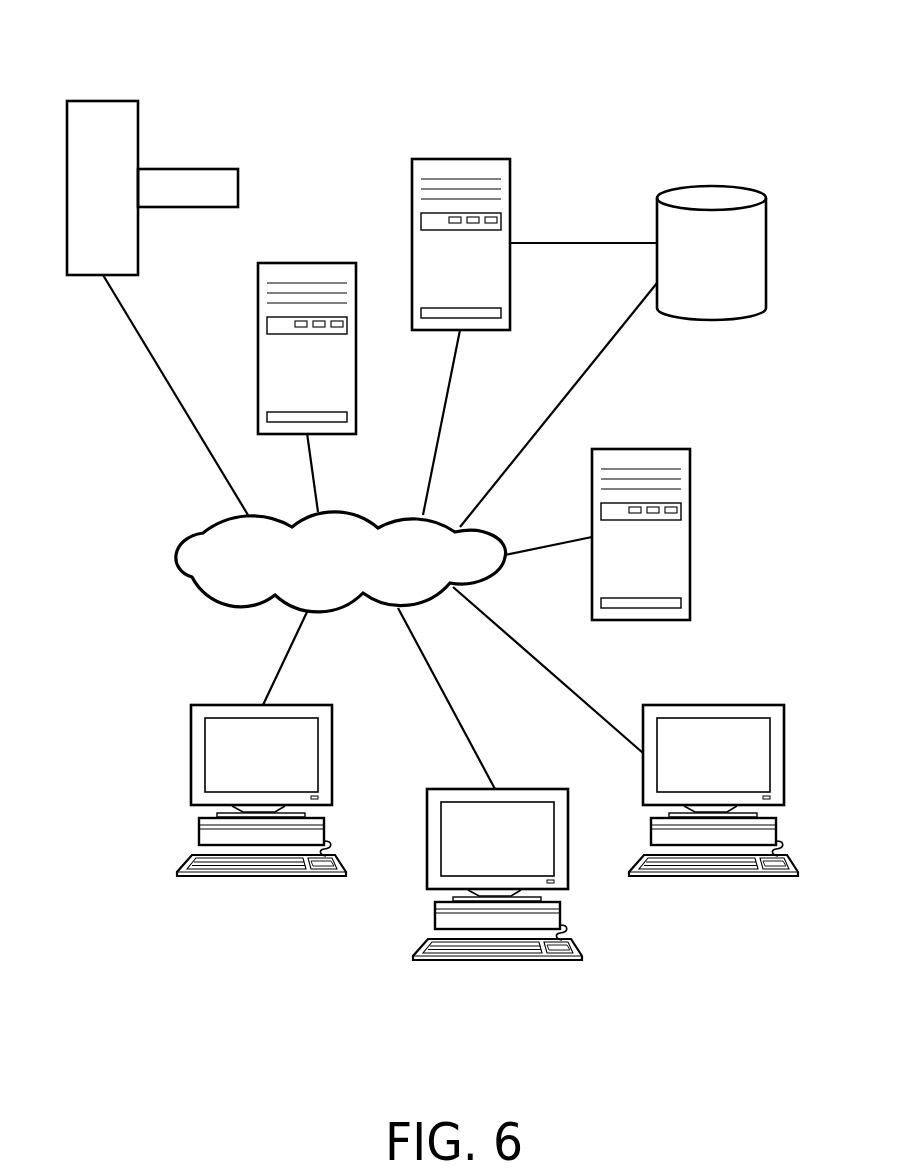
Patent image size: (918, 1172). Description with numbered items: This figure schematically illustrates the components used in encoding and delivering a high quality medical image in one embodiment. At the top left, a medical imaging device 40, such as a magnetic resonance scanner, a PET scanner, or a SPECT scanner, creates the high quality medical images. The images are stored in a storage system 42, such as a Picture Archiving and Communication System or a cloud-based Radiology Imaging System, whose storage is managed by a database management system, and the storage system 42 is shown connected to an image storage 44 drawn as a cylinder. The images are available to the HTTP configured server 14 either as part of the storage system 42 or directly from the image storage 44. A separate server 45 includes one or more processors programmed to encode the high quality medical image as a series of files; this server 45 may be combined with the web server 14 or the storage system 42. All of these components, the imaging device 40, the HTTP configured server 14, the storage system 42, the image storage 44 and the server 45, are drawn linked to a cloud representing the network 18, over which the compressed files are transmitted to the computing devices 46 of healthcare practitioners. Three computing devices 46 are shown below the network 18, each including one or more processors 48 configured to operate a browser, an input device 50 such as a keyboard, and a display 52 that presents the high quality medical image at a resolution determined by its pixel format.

The medical imaging device 40 is at (103, 101).
The HTTP configured server 14 is at (307, 263).
The storage system 42 is at (461, 159).
The image storage 44 is at (711, 198).
The server 45 is at (640, 449).
The network 18 is at (172, 557).
The computing devices 46 is at (475, 886).
The display 52 is at (191, 753).
The processors 48 is at (199, 832).
The input device 50 is at (182, 865).